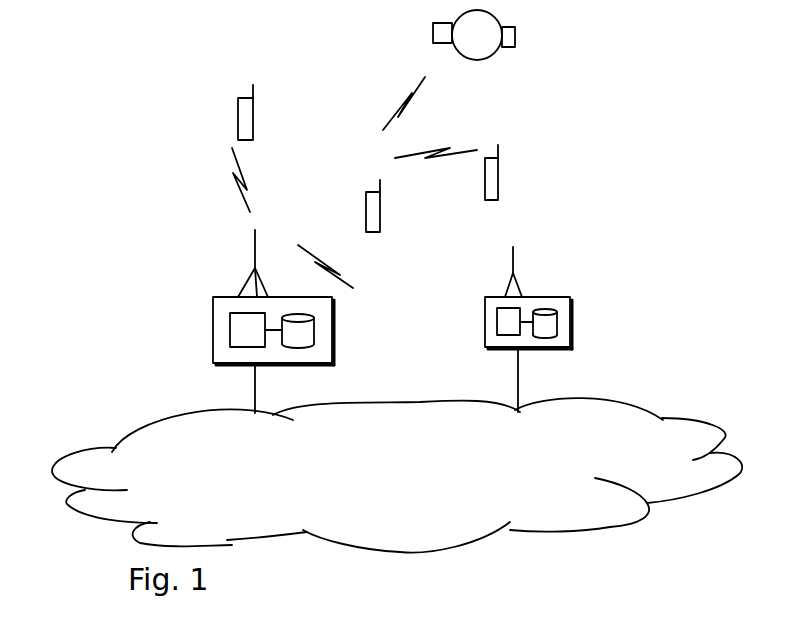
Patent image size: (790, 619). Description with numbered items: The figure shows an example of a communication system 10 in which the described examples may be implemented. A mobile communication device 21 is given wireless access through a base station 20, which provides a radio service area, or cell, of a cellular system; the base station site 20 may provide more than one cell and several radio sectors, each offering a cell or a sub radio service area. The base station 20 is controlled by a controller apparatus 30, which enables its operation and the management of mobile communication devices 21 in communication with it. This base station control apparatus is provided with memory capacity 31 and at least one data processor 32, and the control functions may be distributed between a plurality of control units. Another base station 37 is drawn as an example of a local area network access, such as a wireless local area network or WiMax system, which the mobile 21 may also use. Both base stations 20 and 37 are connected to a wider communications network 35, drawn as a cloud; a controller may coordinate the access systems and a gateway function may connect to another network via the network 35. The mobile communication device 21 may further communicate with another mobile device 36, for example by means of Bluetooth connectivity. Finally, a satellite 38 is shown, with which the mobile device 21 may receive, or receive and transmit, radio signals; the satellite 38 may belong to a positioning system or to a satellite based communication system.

The communication system 10 is at (89, 90).
The base station 20 is at (256, 257).
The mobile communication device 21 is at (375, 207).
The controller apparatus 30 is at (213, 307).
The memory capacity 31 is at (297, 340).
The data processor 32 is at (240, 323).
The wider communications network 35 is at (113, 450).
The another mobile device 36 is at (490, 168).
The base station 37 is at (573, 322).
The satellite 38 is at (490, 21).